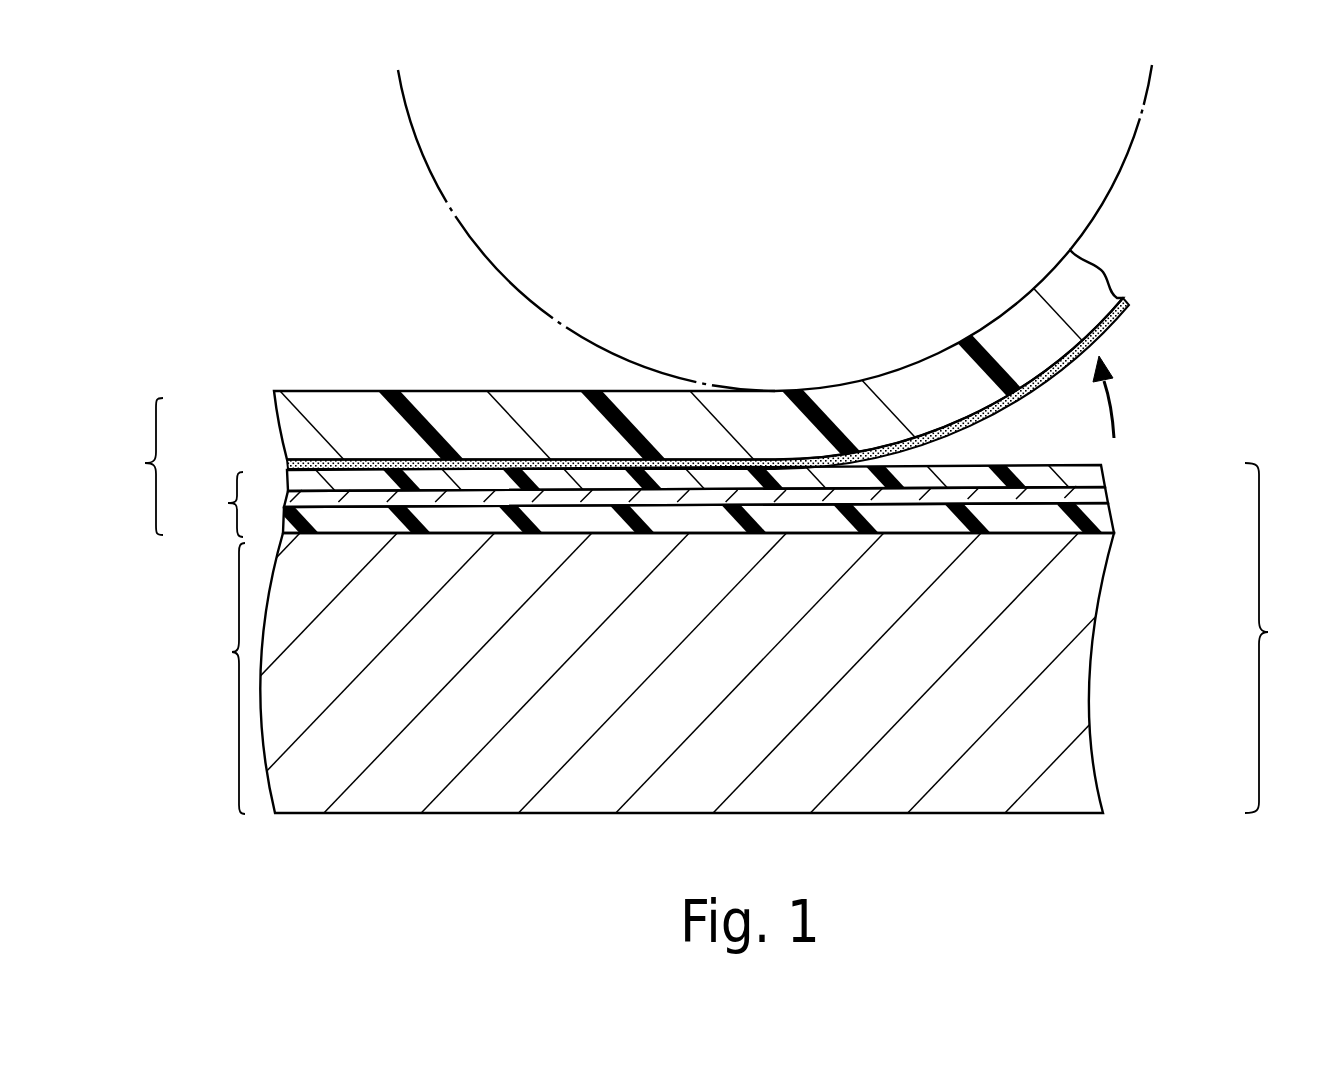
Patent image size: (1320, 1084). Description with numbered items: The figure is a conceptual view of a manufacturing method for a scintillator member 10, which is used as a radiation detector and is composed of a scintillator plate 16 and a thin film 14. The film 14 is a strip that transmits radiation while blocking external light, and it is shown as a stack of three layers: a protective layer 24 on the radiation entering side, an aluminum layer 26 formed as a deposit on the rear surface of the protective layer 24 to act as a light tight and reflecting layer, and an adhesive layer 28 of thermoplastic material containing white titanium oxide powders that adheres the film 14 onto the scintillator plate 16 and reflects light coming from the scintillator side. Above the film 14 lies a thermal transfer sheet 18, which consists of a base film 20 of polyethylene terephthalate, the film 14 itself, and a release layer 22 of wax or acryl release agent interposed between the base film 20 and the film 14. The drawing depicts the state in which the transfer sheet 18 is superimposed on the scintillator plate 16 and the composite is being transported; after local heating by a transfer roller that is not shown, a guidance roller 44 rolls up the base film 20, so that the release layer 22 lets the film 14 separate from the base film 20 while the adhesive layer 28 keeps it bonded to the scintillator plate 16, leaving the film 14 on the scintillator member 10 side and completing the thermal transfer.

The scintillator member 10 is at (676, 559).
The film 14 is at (712, 420).
The scintillator plate 16 is at (676, 673).
The thermal transfer sheet 18 is at (653, 367).
The base film 20 is at (287, 425).
The release layer 22 is at (287, 466).
The protective layer 24 is at (1103, 474).
The aluminum layer 26 is at (1105, 495).
The adhesive layer 28 is at (1105, 518).
The guidance roller 44 is at (443, 198).